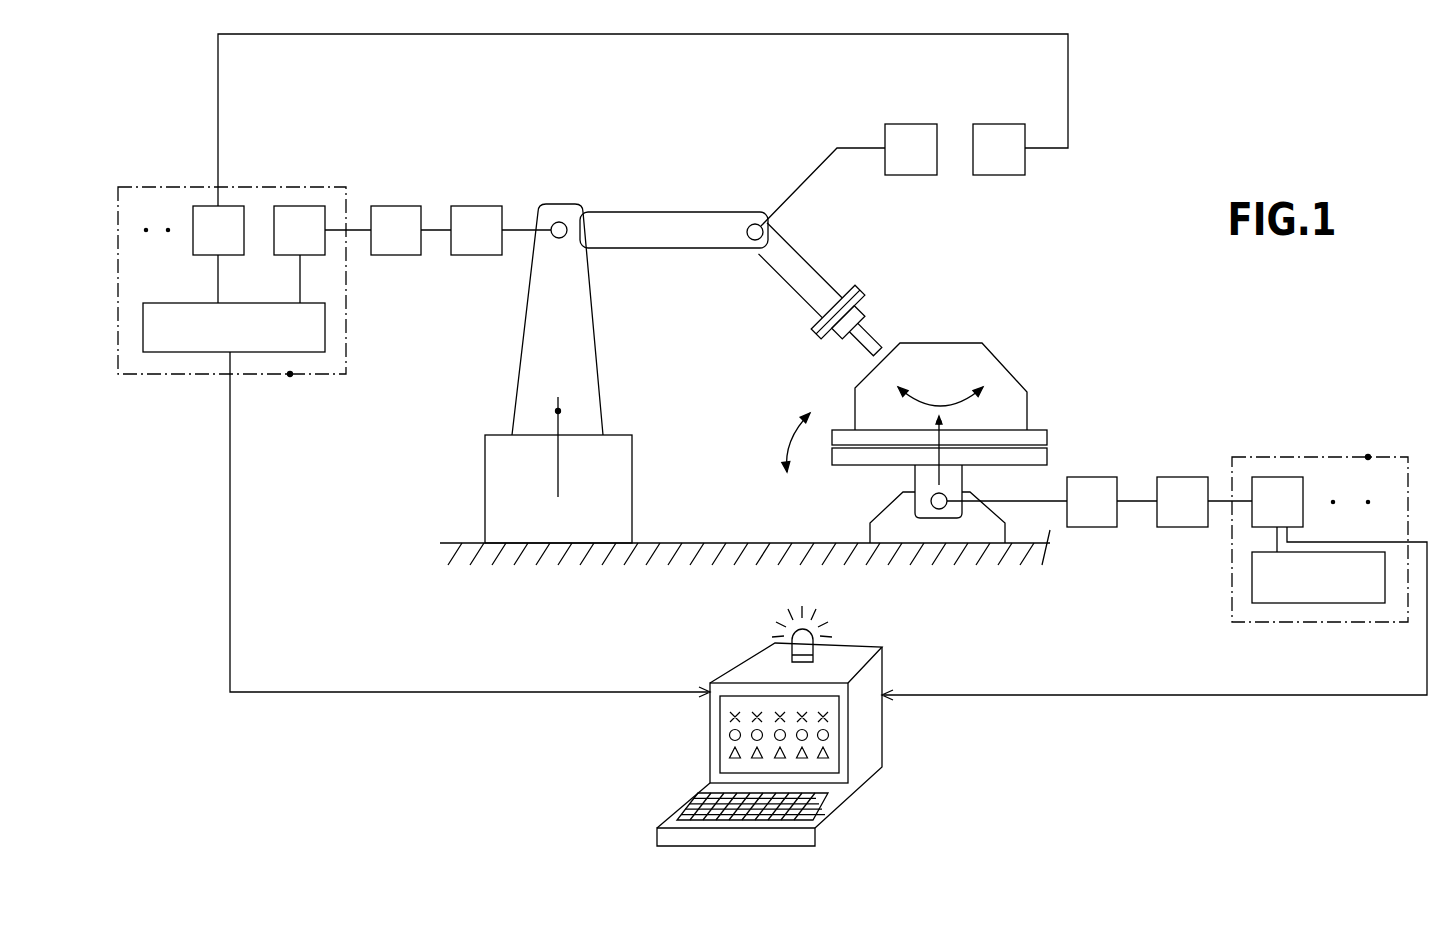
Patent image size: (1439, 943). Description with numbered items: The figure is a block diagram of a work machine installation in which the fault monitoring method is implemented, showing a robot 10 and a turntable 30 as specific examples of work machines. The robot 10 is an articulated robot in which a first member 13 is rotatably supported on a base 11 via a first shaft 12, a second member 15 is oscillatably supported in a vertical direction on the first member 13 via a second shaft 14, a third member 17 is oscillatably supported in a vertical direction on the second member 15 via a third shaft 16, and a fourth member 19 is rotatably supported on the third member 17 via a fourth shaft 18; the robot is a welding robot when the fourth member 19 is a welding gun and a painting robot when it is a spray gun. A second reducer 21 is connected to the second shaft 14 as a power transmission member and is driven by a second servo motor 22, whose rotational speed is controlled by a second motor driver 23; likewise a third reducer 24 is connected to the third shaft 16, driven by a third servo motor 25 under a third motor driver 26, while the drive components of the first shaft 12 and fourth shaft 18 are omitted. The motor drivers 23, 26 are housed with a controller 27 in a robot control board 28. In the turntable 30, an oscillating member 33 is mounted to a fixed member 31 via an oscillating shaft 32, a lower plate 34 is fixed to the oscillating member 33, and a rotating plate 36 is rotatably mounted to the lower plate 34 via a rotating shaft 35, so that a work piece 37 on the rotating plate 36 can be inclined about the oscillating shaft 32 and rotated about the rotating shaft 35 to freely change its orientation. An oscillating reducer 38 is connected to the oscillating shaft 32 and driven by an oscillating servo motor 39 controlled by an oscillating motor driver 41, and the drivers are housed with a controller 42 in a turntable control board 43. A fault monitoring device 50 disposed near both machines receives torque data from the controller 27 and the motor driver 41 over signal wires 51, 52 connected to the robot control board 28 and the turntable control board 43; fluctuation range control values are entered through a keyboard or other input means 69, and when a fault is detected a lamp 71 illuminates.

The robot 10 is at (651, 158).
The base 11 is at (485, 515).
The first shaft 12 is at (556, 411).
The first member 13 is at (523, 353).
The second shaft 14 is at (553, 222).
The second member 15 is at (678, 240).
The third shaft 16 is at (748, 226).
The third member 17 is at (813, 266).
The fourth shaft 18 is at (822, 301).
The fourth member 19 is at (870, 320).
The second reducer 21 is at (475, 205).
The second servo motor 22 is at (393, 205).
The second motor driver 23 is at (300, 205).
The third reducer 24 is at (910, 124).
The third servo motor 25 is at (1000, 124).
The third motor driver 26 is at (208, 205).
The controller 27 is at (327, 328).
The robot control board 28 is at (290, 376).
The turntable 30 is at (999, 321).
The fixed member 31 is at (878, 532).
The oscillating shaft 32 is at (922, 505).
The oscillating member 33 is at (925, 483).
The lower plate 34 is at (1050, 458).
The rotating shaft 35 is at (936, 418).
The rotating plate 36 is at (1050, 437).
The work piece 37 is at (1012, 352).
The oscillating reducer 38 is at (1092, 527).
The oscillating servo motor 39 is at (1183, 527).
The oscillating motor driver 41 is at (1272, 477).
The controller 42 is at (1262, 603).
The turntable control board 43 is at (1368, 457).
The fault monitoring device 50 is at (875, 809).
The signal wire 51 is at (455, 692).
The signal wire 52 is at (1050, 695).
The input means 69 is at (690, 800).
The lamp 71 is at (820, 628).